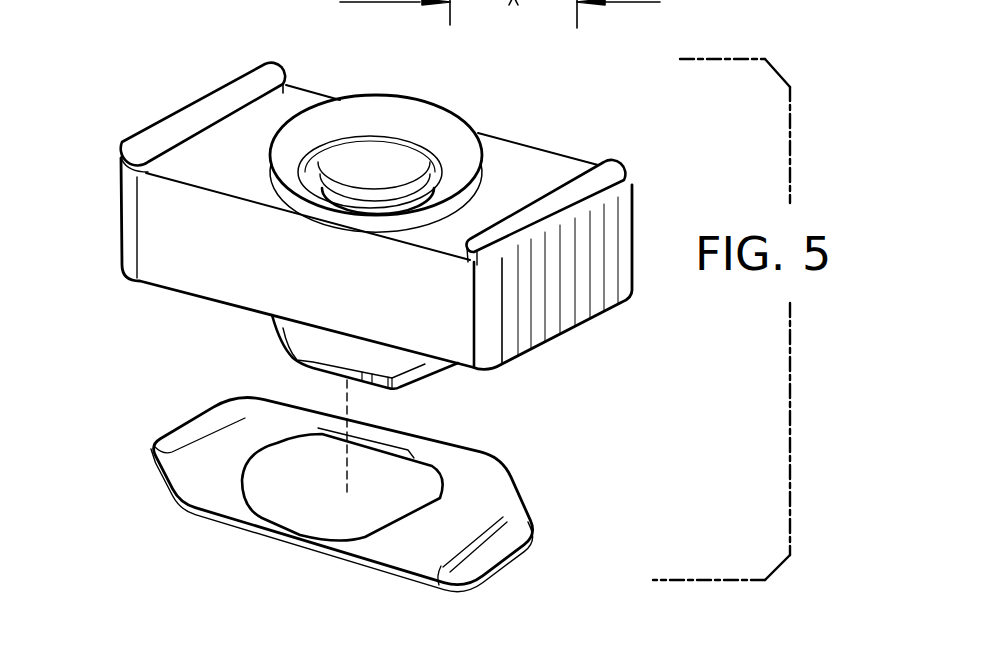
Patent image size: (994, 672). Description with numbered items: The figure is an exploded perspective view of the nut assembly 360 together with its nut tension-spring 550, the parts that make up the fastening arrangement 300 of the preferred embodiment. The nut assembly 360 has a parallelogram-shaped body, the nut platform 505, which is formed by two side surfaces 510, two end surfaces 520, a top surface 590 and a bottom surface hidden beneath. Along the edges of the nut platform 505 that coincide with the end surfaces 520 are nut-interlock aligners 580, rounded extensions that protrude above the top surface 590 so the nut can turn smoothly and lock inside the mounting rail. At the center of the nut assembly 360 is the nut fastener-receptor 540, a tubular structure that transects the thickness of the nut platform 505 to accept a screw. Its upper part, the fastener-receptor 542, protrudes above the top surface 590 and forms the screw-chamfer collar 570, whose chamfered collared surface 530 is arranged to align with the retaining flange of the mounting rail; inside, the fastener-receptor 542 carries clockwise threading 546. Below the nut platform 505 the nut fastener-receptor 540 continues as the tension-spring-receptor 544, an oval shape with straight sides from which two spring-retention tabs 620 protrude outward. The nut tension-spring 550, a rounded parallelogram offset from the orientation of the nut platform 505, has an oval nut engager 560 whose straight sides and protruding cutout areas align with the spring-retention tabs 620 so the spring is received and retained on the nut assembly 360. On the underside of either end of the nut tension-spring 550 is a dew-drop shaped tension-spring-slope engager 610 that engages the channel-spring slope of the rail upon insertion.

The channel nut assembly 300 is at (167, 40).
The nut assembly 360 is at (170, 67).
The nut platform 505 is at (568, 160).
The side surface 510 is at (172, 262).
The end surface 520 is at (597, 300).
The collared surface 530 is at (399, 124).
The nut fastener-receptor 540 is at (309, 60).
The fastener-receptor 542 is at (282, 327).
The tension-spring-receptor 544 is at (287, 353).
The threading 546 is at (418, 176).
The nut tension-spring 550 is at (586, 465).
The nut engager 560 is at (407, 489).
The screw-chamfer collar 570 is at (270, 167).
The nut-interlock aligner 580 is at (176, 126).
The top surface 590 is at (500, 163).
The tension-spring-slope engager 610 is at (184, 432).
The spring-retention tab 620 is at (353, 378).